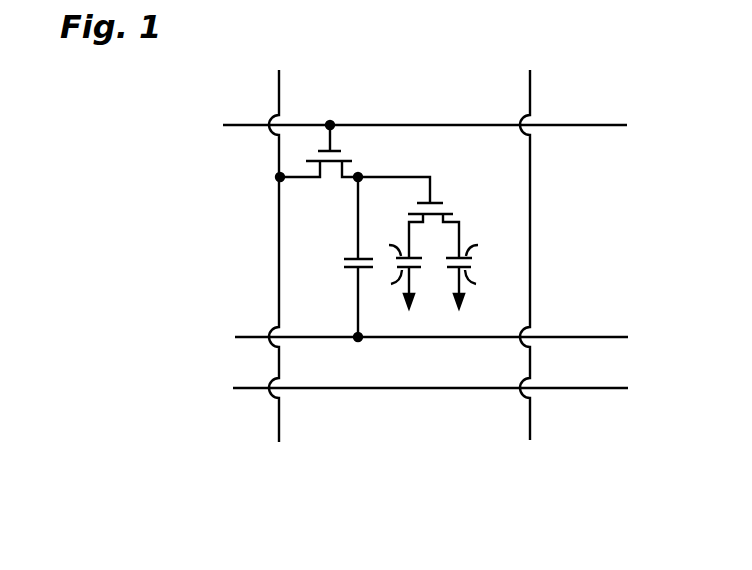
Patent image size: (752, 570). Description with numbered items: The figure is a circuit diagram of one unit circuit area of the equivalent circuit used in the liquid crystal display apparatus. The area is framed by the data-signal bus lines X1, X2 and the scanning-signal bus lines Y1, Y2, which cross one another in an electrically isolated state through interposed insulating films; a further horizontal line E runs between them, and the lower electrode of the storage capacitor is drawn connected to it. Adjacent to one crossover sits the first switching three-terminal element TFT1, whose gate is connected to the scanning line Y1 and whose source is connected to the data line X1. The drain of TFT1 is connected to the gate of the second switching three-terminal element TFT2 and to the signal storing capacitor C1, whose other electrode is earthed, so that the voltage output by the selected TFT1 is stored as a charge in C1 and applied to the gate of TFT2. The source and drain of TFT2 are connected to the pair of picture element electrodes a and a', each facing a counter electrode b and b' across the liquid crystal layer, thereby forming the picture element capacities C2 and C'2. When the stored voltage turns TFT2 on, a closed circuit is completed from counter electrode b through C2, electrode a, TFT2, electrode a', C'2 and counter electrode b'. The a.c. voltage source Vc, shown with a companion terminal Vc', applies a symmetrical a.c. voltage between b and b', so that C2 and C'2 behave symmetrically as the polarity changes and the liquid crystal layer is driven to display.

The electrode line X1 is at (271, 239).
The electrode line X2 is at (517, 238).
The electrode line Y1 is at (404, 115).
The electrode line Y2 is at (412, 389).
The common electrode line E is at (415, 337).
The first switching three-terminal element TFT1 is at (353, 162).
The second switching three-terminal element TFT2 is at (448, 217).
The signal storing capacitor C1 is at (338, 259).
The liquid crystal layer C2 is at (421, 283).
The liquid crystal layer C'2 is at (478, 281).
The picture element electrode a is at (388, 241).
The counter electrode b is at (388, 287).
The picture element electrode a' is at (481, 240).
The counter electrode b' is at (482, 289).
The a.c. voltage source Vc is at (407, 325).
The second common voltage terminal Vc' is at (462, 325).